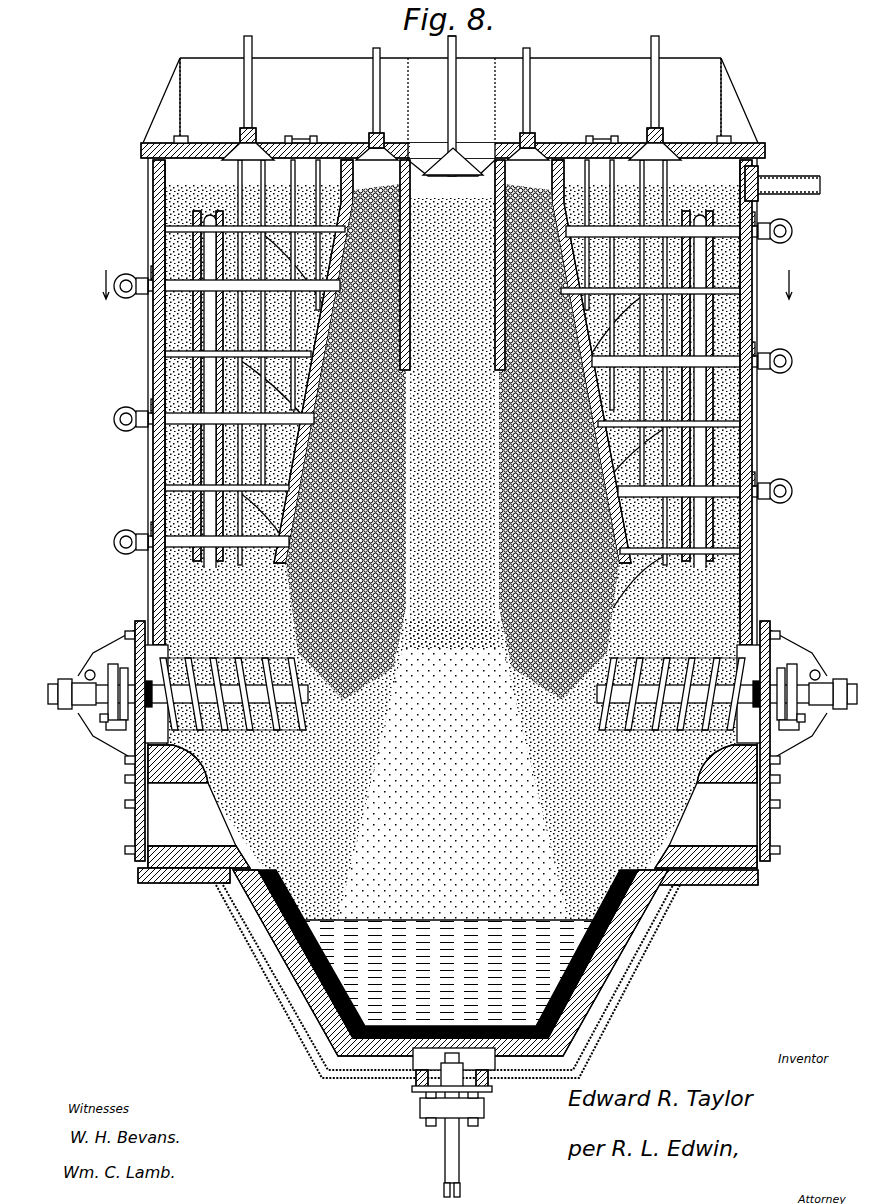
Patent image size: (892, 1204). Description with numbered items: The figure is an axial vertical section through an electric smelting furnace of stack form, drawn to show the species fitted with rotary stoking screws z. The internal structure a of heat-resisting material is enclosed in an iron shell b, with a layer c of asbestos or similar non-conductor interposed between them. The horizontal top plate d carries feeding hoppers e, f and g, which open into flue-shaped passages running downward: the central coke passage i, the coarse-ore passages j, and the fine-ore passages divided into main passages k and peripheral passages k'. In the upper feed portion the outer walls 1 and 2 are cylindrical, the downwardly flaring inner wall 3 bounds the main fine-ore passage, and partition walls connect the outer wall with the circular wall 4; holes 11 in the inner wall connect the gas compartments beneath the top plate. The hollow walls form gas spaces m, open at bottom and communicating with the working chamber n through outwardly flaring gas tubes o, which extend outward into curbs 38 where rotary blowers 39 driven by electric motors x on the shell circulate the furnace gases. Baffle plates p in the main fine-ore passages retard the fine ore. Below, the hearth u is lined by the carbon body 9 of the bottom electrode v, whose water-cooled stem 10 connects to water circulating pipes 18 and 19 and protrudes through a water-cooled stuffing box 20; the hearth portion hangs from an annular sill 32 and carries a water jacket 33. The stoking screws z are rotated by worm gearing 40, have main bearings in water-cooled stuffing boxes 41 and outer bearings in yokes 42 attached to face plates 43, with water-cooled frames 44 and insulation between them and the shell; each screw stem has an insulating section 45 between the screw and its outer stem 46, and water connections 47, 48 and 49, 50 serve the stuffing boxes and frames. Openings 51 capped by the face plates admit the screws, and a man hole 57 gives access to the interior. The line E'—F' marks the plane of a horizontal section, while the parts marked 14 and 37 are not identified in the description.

The outer wall 1 is at (150, 100).
The hollow wall 2 is at (196, 170).
The inner wall 3 is at (350, 135).
The circular wall 4 is at (452, 148).
The carbon body 9 is at (320, 968).
The water-cooled metallic stem 10 is at (436, 1130).
The holes 11 is at (452, 361).
The bolts 14 is at (305, 130).
The water circulating pipe 18 is at (434, 1187).
The water circulating pipe 19 is at (452, 1187).
The water-cooled stuffing box 20 is at (412, 1098).
The annular metallic sill 32 is at (708, 877).
The water jacket 33 is at (240, 930).
The outlet pipe 37 is at (778, 182).
The curbs 38 is at (148, 258).
The rotary blowers 39 is at (118, 424).
The worm gearing 40 is at (90, 698).
The water-cooled stuffing box 41 is at (110, 725).
The yoke 42 is at (95, 722).
The face plate 43 is at (122, 760).
The water-cooled frame 44 is at (124, 620).
The insulating section 45 is at (118, 645).
The outer stem 46 is at (80, 662).
The inlet water connection 47 is at (80, 648).
The outlet water connection 48 is at (118, 772).
The inlet water connection 49 is at (128, 612).
The outlet water connection 50 is at (762, 775).
The openings 51 is at (452, 694).
The man hole 57 is at (452, 806).
The internal structure a is at (141, 324).
The metallic shell b is at (145, 194).
The non-conducting layer c is at (157, 338).
The top plate d is at (133, 143).
The feeding hopper e is at (451, 106).
The feeding hopper f is at (450, 83).
The feeding hopper g is at (450, 100).
The coke passage i is at (452, 265).
The coarse-ore passage j is at (452, 436).
The main fine-ore passage k is at (452, 362).
The peripheral fine-ore passage k' is at (447, 386).
The gas space m is at (197, 455).
The working chamber n is at (426, 678).
The gas tubes o is at (150, 296).
The baffle plates p is at (180, 215).
The hearth u is at (449, 973).
The bottom electrode v is at (450, 1003).
The electric motors x is at (794, 483).
The stoking screws z is at (452, 694).
The section line E' is at (91, 284).
The section line F' is at (802, 284).